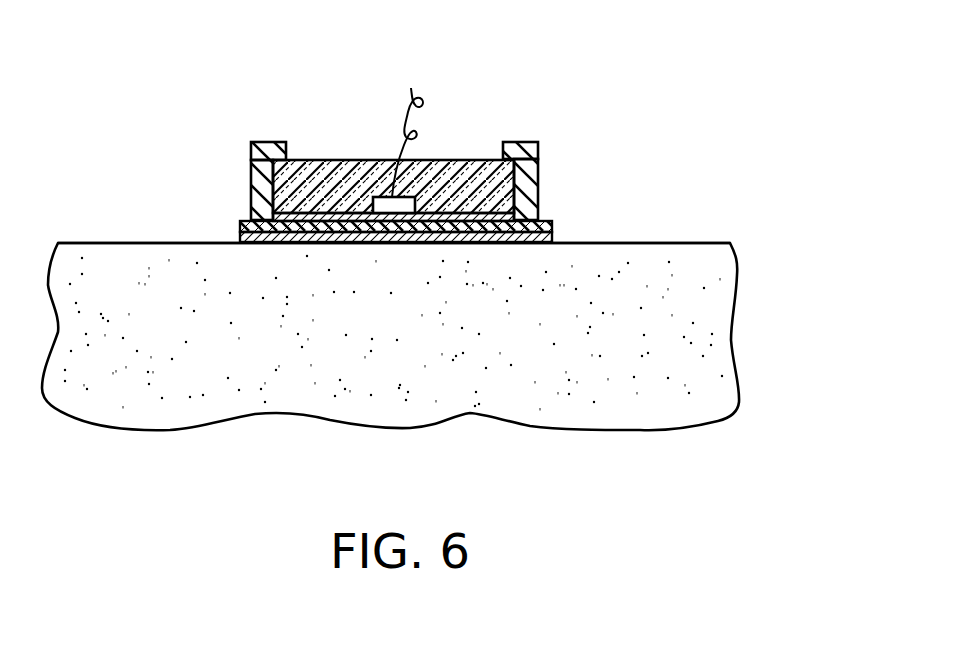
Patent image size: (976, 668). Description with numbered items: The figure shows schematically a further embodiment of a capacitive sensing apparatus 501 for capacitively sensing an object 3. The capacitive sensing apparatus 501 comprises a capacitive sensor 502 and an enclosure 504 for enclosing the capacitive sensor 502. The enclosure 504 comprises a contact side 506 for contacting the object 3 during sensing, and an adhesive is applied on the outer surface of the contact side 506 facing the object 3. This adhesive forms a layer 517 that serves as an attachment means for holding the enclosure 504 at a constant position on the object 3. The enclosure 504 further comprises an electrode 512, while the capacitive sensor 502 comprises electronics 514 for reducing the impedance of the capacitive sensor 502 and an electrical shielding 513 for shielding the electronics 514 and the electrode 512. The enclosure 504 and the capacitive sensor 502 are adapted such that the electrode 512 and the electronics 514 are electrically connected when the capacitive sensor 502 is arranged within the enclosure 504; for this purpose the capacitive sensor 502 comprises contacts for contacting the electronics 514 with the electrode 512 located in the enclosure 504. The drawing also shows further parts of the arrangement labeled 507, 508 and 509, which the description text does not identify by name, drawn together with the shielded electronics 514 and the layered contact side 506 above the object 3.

The object 3 is at (725, 390).
The capacitive sensing apparatus 501 is at (612, 112).
The capacitive sensor 502 is at (276, 173).
The enclosure 504 is at (263, 247).
The contact side 506 is at (546, 222).
The right wall cap 507 is at (528, 150).
The right wall 508 is at (530, 182).
The connection wire 509 is at (411, 88).
The electrode 512 is at (327, 213).
The electrical shielding 513 is at (462, 172).
The electronics 514 is at (388, 200).
The layer 517 is at (548, 239).